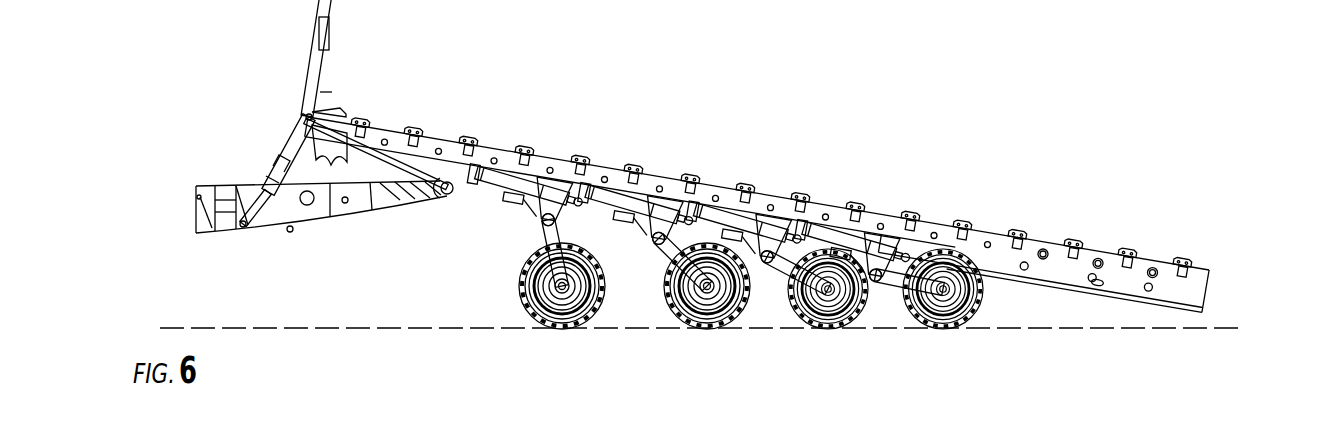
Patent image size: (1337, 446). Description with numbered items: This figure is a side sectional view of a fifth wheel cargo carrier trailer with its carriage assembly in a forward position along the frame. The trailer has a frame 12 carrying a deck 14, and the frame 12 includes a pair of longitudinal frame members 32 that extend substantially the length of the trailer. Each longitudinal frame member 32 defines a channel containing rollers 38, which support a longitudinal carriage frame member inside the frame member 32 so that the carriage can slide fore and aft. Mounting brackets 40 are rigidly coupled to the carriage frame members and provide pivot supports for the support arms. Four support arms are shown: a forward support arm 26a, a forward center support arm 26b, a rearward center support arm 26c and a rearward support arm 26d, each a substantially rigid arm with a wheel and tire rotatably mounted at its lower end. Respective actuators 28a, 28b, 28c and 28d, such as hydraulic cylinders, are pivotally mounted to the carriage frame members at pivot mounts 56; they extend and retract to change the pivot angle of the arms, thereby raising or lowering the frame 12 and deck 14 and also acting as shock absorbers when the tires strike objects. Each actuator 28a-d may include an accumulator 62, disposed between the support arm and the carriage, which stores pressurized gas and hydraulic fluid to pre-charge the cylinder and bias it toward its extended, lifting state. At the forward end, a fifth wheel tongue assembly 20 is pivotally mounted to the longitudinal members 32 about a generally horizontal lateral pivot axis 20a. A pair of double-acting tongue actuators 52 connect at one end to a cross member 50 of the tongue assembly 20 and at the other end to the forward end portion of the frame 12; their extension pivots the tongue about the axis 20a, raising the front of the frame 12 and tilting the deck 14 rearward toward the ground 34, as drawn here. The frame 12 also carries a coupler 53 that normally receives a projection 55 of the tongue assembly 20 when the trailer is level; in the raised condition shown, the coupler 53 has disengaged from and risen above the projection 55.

The frame 12 is at (377, 157).
The deck 14 is at (404, 80).
The fifth wheel tongue assembly 20 is at (302, 290).
The pivot axis 20a is at (443, 196).
The forward support arm 26a is at (513, 243).
The forward center support arm 26b is at (648, 243).
The rearward center support arm 26c is at (782, 263).
The rearward support arm 26d is at (893, 272).
The forward actuator 28a is at (492, 202).
The forward center actuator 28b is at (605, 222).
The rearward center actuator 28c is at (716, 200).
The rearward actuator 28d is at (840, 222).
The longitudinal frame member 32 is at (1048, 268).
The ground 34 is at (348, 330).
The rollers 38 is at (548, 157).
The mounting bracket 40 is at (533, 212).
The cross member 50 is at (222, 233).
The tongue actuator 52 is at (268, 170).
The coupler 53 is at (330, 207).
The projection 55 is at (290, 232).
The pivot mount 56 is at (462, 166).
The accumulator 62 is at (623, 217).